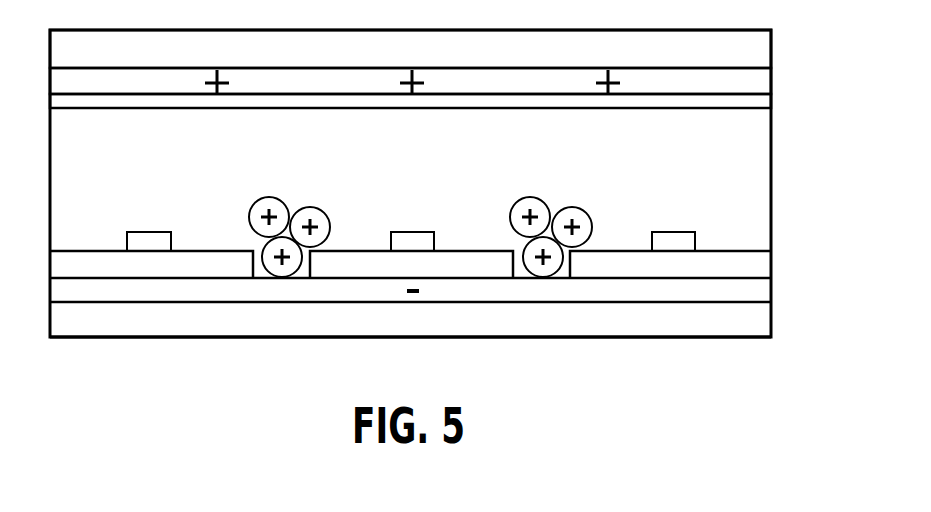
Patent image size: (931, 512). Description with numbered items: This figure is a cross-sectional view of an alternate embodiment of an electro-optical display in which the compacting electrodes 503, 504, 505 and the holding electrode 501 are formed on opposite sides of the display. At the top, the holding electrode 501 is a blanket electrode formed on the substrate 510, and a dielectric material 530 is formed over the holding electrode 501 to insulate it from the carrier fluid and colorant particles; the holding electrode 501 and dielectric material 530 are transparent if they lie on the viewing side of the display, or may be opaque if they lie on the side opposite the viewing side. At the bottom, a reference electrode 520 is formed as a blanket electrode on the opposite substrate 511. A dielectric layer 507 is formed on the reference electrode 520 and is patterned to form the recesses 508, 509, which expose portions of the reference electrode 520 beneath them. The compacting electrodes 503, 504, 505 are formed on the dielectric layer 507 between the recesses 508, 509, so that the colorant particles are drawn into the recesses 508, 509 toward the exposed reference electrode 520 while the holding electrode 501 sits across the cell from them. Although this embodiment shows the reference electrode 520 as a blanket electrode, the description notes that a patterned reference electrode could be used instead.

The substrate 510 is at (760, 47).
The holding electrode 501 is at (752, 81).
The dielectric material 530 is at (746, 101).
The dielectric layer 507 is at (763, 273).
The reference electrode 520 is at (763, 283).
The opposite substrate 511 is at (753, 319).
The compacting electrode 503 is at (145, 238).
The compacting electrode 504 is at (410, 237).
The compacting electrode 505 is at (668, 237).
The recess 509 is at (297, 277).
The recess 508 is at (555, 277).